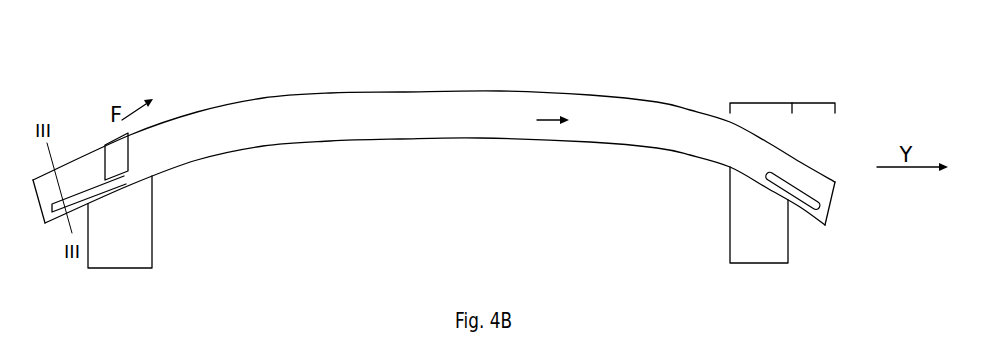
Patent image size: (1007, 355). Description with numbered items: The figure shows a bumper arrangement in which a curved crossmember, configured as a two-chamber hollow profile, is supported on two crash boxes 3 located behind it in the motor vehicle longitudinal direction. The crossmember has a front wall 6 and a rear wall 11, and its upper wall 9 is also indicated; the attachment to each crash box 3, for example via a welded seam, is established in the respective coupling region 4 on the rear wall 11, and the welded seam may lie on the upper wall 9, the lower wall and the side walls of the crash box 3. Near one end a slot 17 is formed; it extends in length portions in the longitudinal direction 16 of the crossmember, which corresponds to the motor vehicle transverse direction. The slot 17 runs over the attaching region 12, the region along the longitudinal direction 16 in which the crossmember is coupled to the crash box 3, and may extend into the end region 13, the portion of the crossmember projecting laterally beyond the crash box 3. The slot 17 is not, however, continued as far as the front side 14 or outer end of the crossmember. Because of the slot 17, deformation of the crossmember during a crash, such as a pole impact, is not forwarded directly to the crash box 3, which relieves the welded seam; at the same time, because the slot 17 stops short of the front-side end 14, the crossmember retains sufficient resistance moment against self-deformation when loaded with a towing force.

The crash box 3 is at (133, 257).
The coupling region 4 is at (122, 188).
The front wall 6 is at (373, 93).
The upper wall 9 is at (434, 130).
The rear wall 11 is at (372, 145).
The attaching region 12 is at (758, 103).
The end region 13 is at (813, 103).
The front side 14 is at (836, 203).
The longitudinal direction 16 is at (537, 121).
The slot 17 is at (797, 195).